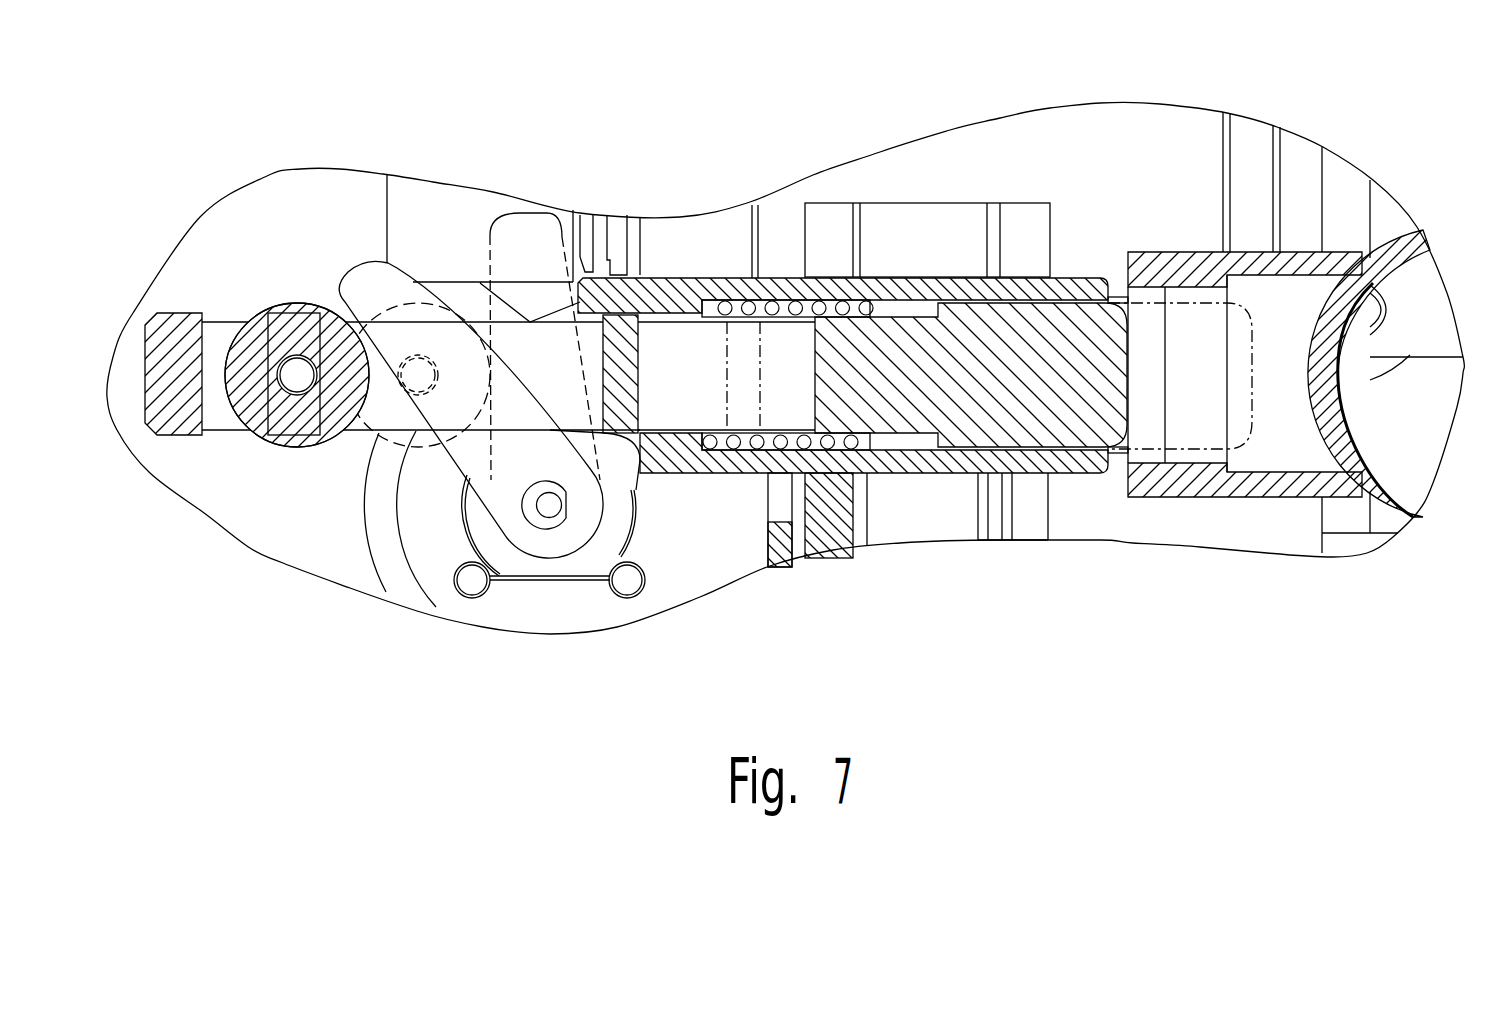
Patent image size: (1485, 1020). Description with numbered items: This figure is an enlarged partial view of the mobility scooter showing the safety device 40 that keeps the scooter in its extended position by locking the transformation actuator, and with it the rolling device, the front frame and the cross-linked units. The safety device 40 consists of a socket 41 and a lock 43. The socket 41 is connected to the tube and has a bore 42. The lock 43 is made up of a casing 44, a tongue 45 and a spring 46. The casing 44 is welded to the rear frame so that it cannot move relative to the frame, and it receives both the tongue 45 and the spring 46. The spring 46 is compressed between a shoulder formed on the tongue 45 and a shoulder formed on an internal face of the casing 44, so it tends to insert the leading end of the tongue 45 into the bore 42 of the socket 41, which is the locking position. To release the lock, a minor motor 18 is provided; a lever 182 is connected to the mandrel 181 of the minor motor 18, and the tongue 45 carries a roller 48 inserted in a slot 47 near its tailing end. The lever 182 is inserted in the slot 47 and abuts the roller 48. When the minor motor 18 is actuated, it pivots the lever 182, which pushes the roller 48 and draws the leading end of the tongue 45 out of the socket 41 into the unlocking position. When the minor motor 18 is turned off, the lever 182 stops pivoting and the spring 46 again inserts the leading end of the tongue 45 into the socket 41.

The minor motor 18 is at (530, 565).
The mandrel 181 is at (558, 520).
The lever 182 is at (393, 277).
The safety device 40 is at (446, 505).
The socket 41 is at (1195, 265).
The bore 42 is at (1155, 455).
The lock 43 is at (750, 640).
The casing 44 is at (920, 463).
The tongue 45 is at (625, 443).
The spring 46 is at (827, 443).
The slot 47 is at (218, 330).
The roller 48 is at (282, 443).